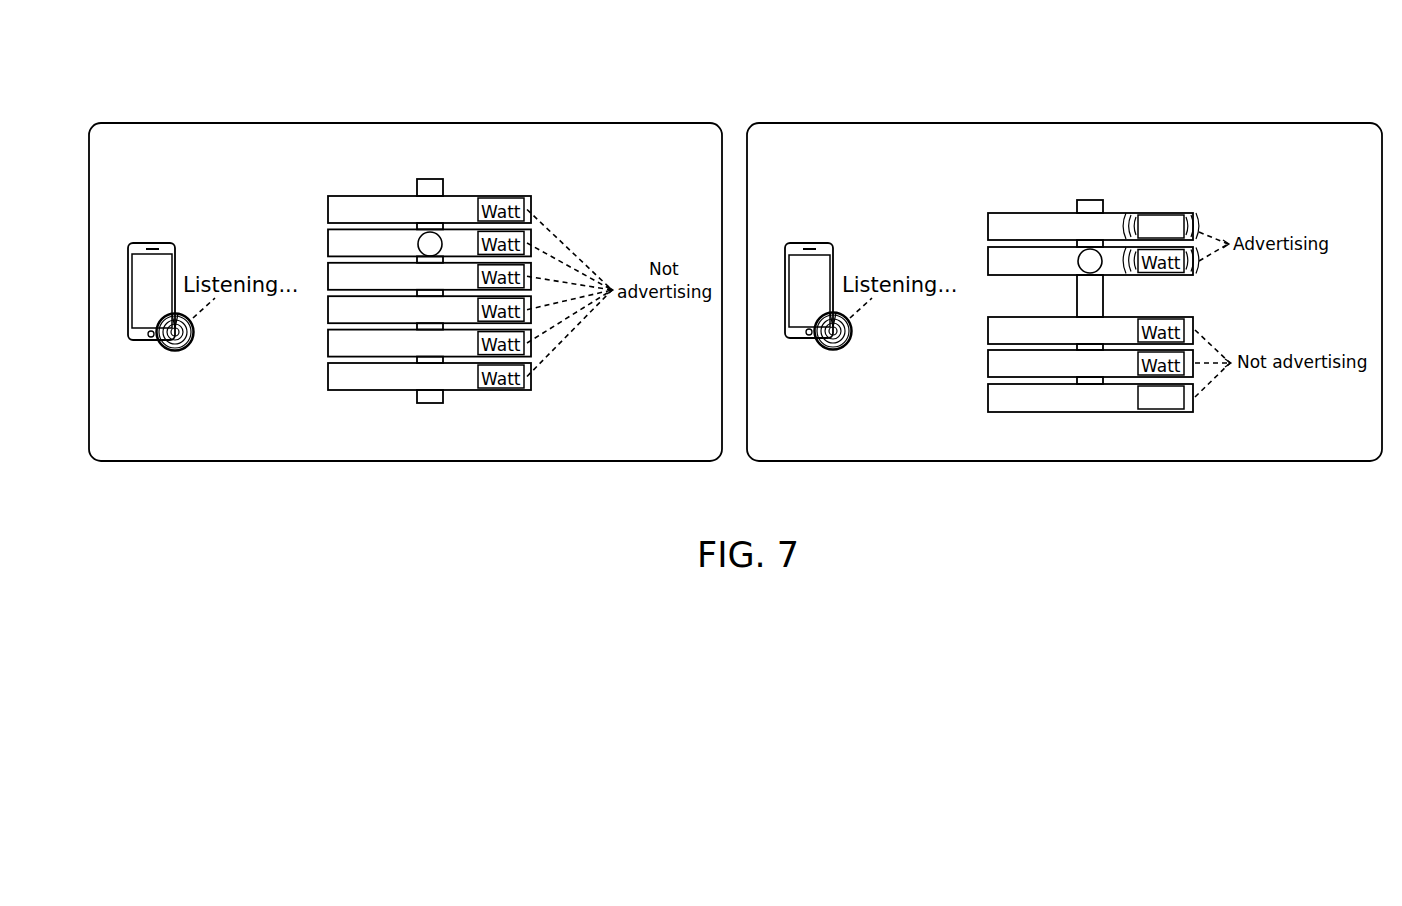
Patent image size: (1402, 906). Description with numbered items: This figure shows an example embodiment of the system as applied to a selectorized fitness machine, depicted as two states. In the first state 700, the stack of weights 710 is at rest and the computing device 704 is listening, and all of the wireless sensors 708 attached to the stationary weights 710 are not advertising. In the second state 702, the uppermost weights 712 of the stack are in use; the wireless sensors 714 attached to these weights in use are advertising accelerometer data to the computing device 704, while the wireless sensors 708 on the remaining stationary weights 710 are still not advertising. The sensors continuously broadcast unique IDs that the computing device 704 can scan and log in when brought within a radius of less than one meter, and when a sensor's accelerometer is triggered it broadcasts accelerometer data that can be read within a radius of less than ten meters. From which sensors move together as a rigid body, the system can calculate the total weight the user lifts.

The first state of lighting system 700 is at (405, 122).
The second state of lighting system 702 is at (1064, 122).
The computing device 704 is at (808, 241).
The wireless sensors 708 is at (1138, 395).
The weights 710 is at (988, 394).
The luminaire 712 is at (1027, 226).
The wireless sensors 714 is at (1162, 215).